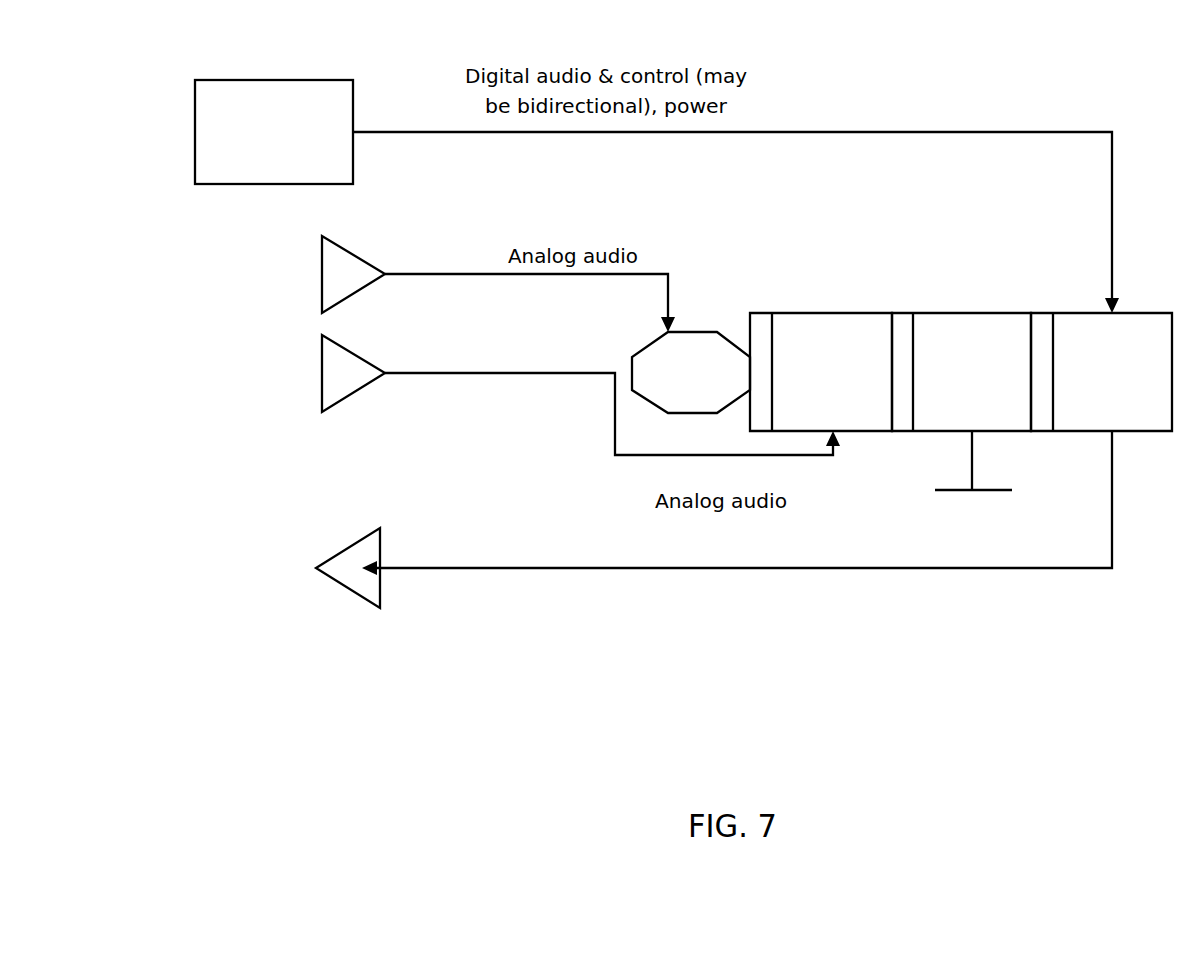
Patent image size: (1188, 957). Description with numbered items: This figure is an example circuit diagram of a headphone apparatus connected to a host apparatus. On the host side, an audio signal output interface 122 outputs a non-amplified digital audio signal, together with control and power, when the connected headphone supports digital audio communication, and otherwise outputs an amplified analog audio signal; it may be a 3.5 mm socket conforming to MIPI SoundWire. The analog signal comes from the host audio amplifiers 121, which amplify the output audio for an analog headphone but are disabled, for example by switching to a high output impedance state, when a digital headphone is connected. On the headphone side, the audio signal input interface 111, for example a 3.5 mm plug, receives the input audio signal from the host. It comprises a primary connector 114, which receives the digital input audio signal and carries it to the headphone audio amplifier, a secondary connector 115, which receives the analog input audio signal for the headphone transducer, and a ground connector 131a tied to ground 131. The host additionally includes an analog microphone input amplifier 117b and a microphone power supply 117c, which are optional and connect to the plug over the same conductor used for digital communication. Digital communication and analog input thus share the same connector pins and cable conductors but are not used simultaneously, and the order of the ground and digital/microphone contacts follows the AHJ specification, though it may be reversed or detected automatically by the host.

The audio signal output interface 122 is at (305, 80).
The host audio amplifier 121 is at (387, 324).
The audio signal input interface 111 is at (902, 300).
The secondary connector 115 is at (720, 332).
The ground connector 131a is at (1013, 313).
The primary connector 114 is at (1087, 313).
The ground 131 is at (1005, 469).
The analog microphone input amplifier 117b is at (424, 631).
The microphone power supply 117c is at (437, 597).